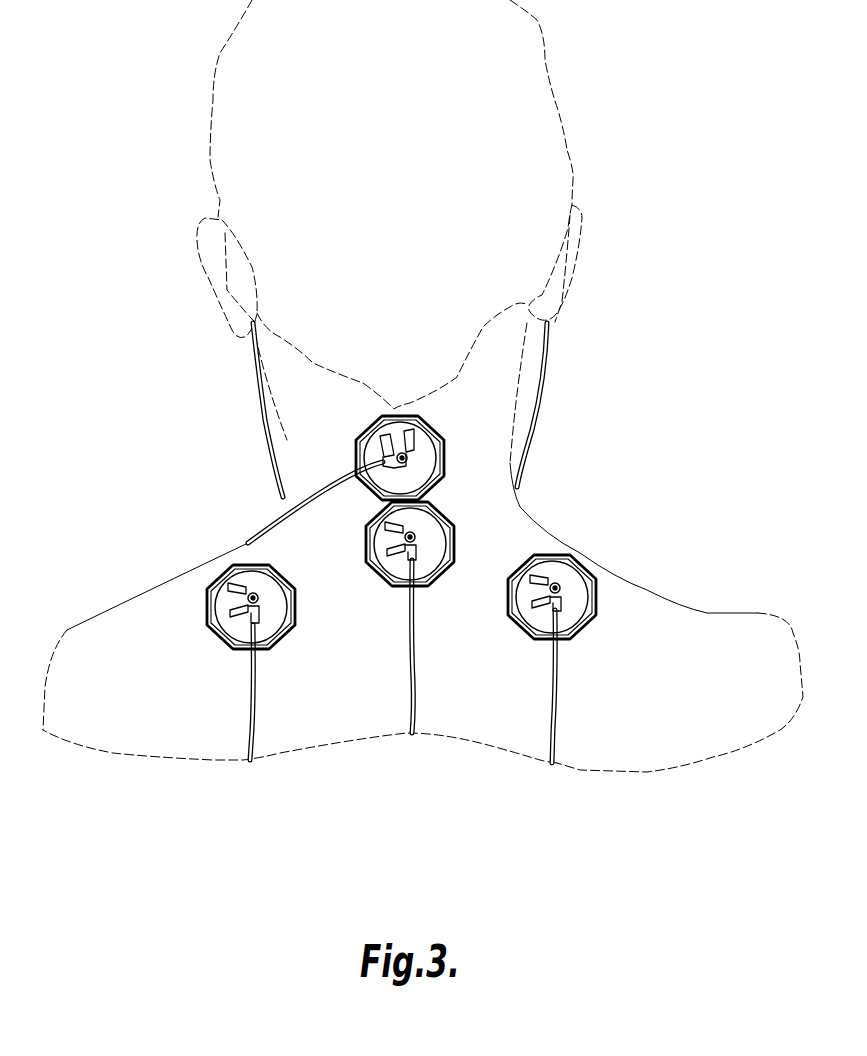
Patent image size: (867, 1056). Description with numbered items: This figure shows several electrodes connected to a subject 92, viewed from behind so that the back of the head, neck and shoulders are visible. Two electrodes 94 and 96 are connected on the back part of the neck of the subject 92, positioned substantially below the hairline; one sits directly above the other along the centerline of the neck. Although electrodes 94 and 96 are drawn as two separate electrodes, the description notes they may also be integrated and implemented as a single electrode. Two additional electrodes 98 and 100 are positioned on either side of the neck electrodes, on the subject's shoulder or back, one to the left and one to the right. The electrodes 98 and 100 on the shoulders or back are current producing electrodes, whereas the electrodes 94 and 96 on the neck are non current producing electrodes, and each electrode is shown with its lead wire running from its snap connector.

The subject 92 is at (562, 128).
The electrode 94 is at (430, 458).
The electrode 96 is at (433, 547).
The electrode 98 is at (280, 600).
The electrode 100 is at (580, 605).